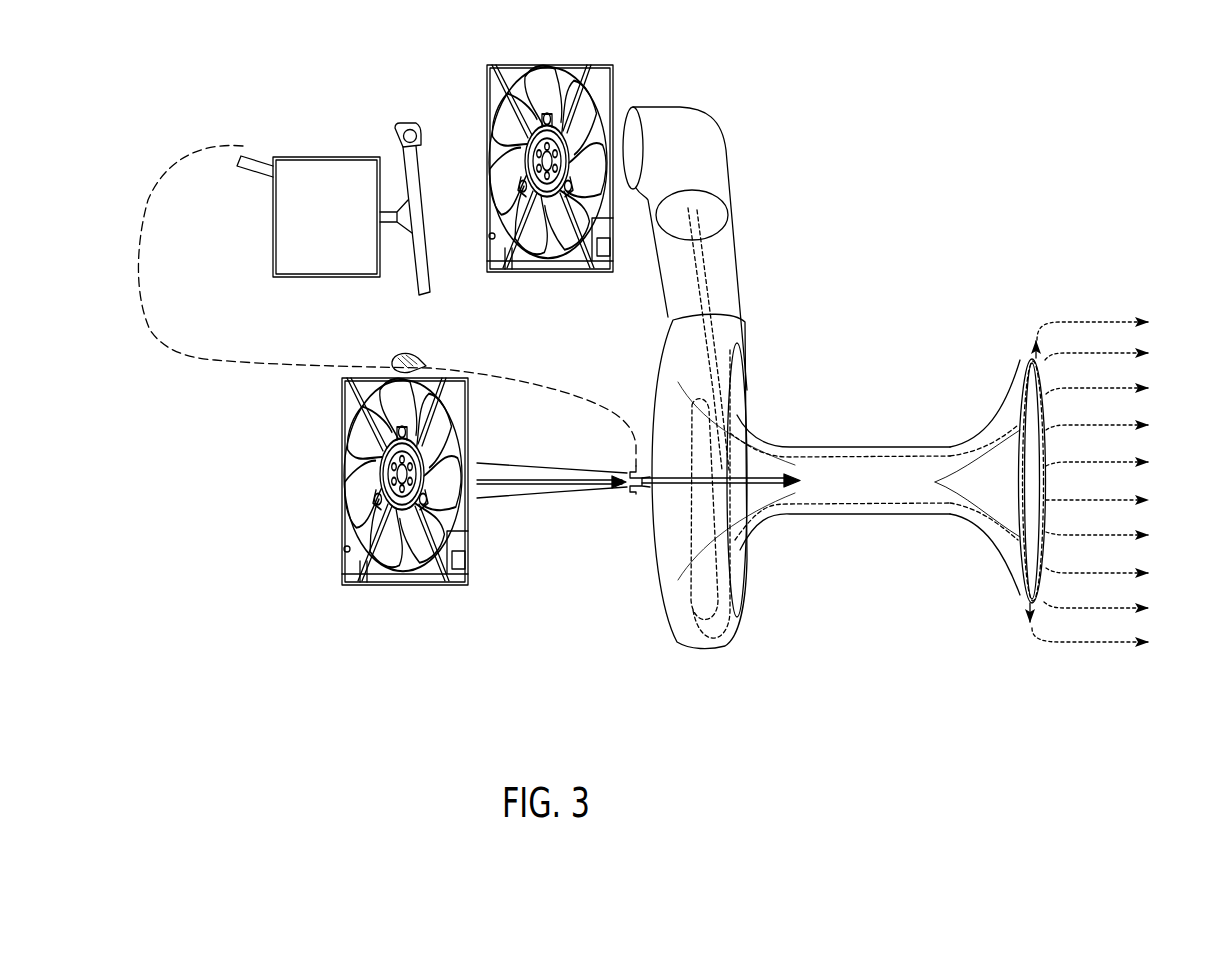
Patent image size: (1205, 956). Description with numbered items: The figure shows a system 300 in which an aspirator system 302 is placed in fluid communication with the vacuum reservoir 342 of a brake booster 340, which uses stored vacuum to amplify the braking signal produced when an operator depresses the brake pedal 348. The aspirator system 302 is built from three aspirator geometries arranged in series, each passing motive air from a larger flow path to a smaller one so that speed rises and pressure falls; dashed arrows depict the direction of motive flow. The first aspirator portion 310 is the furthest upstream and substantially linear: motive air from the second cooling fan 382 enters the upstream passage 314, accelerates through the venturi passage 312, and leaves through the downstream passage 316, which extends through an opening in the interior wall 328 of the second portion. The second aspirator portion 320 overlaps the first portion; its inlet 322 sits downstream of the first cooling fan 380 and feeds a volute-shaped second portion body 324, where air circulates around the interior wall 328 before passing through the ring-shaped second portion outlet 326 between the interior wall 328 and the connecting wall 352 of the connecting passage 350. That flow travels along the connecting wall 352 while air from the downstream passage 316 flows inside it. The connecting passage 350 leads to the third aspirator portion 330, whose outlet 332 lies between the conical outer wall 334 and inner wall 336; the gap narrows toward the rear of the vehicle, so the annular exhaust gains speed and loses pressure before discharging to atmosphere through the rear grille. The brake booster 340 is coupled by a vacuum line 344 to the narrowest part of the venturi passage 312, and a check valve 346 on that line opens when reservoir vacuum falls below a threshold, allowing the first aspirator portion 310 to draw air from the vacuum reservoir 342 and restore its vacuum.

The system 300 is at (1136, 92).
The aspirator system 302 is at (949, 153).
The first aspirator portion 310 is at (586, 431).
The venturi passage 312 is at (626, 505).
The upstream passage 314 is at (490, 465).
The downstream passage 316 is at (792, 496).
The second aspirator portion 320 is at (783, 310).
The inlet 322 is at (691, 163).
The second portion body 324 is at (776, 607).
The second portion outlet 326 is at (752, 530).
The interior wall 328 is at (773, 462).
The third aspirator portion 330 is at (1008, 378).
The outlet 332 is at (997, 527).
The outer wall 334 is at (983, 433).
The inner wall 336 is at (963, 493).
The brake booster 340 is at (303, 114).
The vacuum reservoir 342 is at (328, 230).
The vacuum line 344 is at (489, 370).
The check valve 346 is at (393, 358).
The brake pedal 348 is at (458, 181).
The connecting passage 350 is at (890, 490).
The connecting wall 352 is at (873, 517).
The first cooling fan 380 is at (487, 100).
The second cooling fan 382 is at (343, 410).